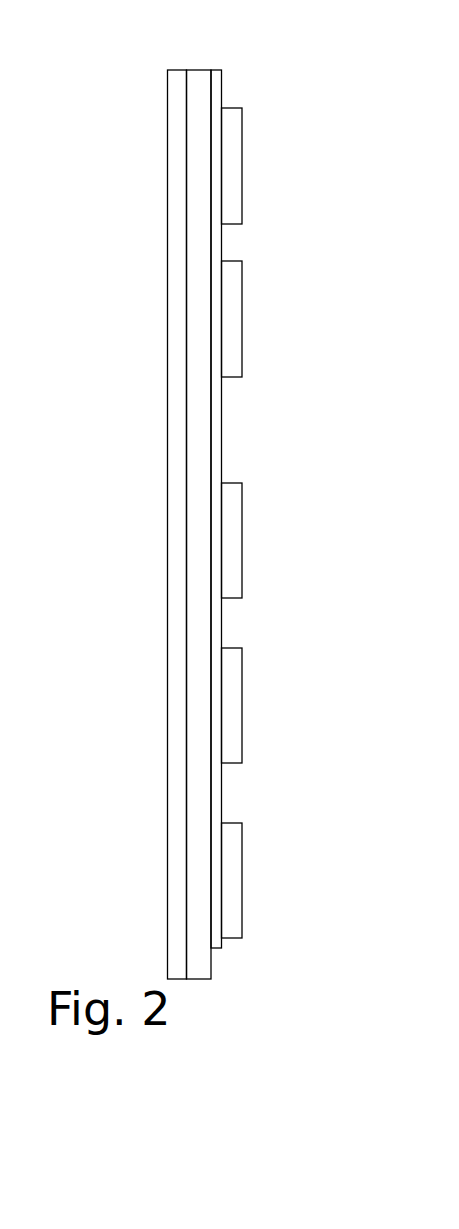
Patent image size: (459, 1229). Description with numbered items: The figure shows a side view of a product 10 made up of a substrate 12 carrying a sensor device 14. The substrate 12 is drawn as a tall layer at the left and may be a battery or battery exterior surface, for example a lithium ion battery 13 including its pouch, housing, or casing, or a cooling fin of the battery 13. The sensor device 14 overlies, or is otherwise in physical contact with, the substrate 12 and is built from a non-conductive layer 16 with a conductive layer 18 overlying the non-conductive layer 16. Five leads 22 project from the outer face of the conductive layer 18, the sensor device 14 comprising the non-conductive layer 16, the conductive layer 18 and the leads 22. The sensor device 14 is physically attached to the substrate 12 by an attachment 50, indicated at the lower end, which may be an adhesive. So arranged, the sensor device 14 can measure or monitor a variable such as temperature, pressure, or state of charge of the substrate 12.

The product 10 is at (135, 713).
The substrate 12 is at (176, 69).
The lithium ion battery 13 is at (167, 254).
The sensor device 14 is at (307, 700).
The non-conductive layer 16 is at (197, 69).
The conductive layer 18 is at (217, 69).
The lead 22 is at (242, 165).
The attachment 50 is at (187, 980).